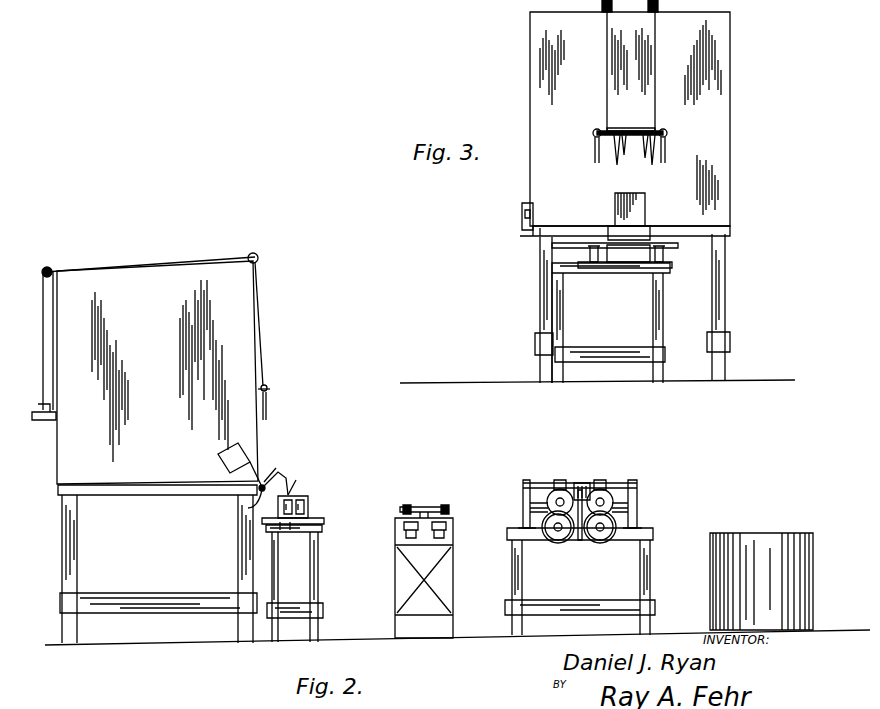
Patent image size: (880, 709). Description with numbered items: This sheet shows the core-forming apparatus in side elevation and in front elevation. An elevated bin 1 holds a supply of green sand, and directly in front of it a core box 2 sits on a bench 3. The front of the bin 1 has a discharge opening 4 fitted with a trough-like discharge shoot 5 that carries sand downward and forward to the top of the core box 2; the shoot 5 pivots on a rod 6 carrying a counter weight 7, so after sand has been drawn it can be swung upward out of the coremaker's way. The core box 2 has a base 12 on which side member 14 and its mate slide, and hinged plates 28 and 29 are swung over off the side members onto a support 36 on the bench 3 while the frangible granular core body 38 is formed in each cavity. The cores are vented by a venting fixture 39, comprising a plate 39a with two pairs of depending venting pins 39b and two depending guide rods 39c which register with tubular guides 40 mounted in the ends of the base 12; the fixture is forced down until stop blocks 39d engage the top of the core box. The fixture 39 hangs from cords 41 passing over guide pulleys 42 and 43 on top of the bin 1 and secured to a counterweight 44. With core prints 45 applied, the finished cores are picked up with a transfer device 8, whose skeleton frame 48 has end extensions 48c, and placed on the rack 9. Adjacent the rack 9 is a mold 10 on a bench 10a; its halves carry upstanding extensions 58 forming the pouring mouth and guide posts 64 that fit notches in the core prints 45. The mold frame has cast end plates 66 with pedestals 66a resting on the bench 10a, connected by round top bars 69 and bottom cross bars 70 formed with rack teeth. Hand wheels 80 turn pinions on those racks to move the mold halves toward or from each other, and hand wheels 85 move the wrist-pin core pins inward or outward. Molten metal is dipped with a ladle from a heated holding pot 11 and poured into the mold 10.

In FIG. 2, the bin 1 is at (157, 372).
In FIG. 3, the bin 1 is at (730, 50).
In FIG. 2, the core box 2 is at (306, 506).
In FIG. 3, the core box 2 is at (648, 262).
In FIG. 2, the bench 3 is at (320, 562).
In FIG. 3, the bench 3 is at (556, 300).
In FIG. 3, the discharge opening 4 is at (640, 205).
In FIG. 2, the discharge shoot 5 is at (275, 478).
In FIG. 3, the discharge shoot 5 is at (648, 228).
In FIG. 2, the rod 6 is at (246, 509).
In FIG. 3, the rod 6 is at (563, 226).
In FIG. 2, the counter weight 7 is at (215, 466).
In FIG. 3, the counter weight 7 is at (521, 205).
In FIG. 2, the transfer device 8 is at (422, 505).
In FIG. 2, the rack 9 is at (453, 520).
In FIG. 2, the mold 10 is at (620, 508).
In FIG. 2, the bench 10a is at (648, 562).
In FIG. 2, the holding pot 11 is at (752, 545).
In FIG. 2, the base 12 is at (322, 530).
In FIG. 3, the base 12 is at (623, 262).
In FIG. 2, the side member 14 is at (157, 564).
In FIG. 3, the side member 14 is at (612, 274).
In FIG. 2, the hinged plate 28 is at (296, 480).
In FIG. 2, the hinged plate 29 is at (300, 497).
In FIG. 3, the hinged plate 29 is at (552, 245).
In FIG. 2, the support 36 is at (324, 520).
In FIG. 3, the support 36 is at (552, 256).
In FIG. 2, the core body 38 is at (402, 534).
In FIG. 2, the venting fixture 39 is at (270, 392).
In FIG. 3, the venting fixture 39 is at (597, 130).
In FIG. 2, the plate 39a is at (268, 386).
In FIG. 3, the plate 39a is at (636, 128).
In FIG. 3, the venting pins 39b is at (617, 160).
In FIG. 2, the guide rods 39c is at (267, 412).
In FIG. 3, the guide rods 39c is at (682, 152).
In FIG. 3, the stop blocks 39d is at (680, 128).
In FIG. 2, the tubular guides 40 is at (288, 532).
In FIG. 3, the tubular guides 40 is at (665, 250).
In FIG. 2, the cords 41 is at (262, 308).
In FIG. 3, the cords 41 is at (607, 62).
In FIG. 2, the guide pulley 42 is at (258, 250).
In FIG. 2, the guide pulley 43 is at (47, 268).
In FIG. 2, the counterweight 44 is at (50, 410).
In FIG. 2, the core prints 45 is at (438, 512).
In FIG. 2, the frame 48 is at (430, 506).
In FIG. 2, the end extensions 48c is at (475, 493).
In FIG. 2, the upstanding extensions 58 is at (582, 482).
In FIG. 2, the guide posts 64 is at (570, 486).
In FIG. 2, the end plates 66 is at (528, 480).
In FIG. 2, the pedestals 66a is at (672, 524).
In FIG. 2, the top bars 69 is at (620, 482).
In FIG. 2, the bottom cross bars 70 is at (612, 540).
In FIG. 2, the hand wheels 80 is at (548, 542).
In FIG. 2, the hand wheels 85 is at (530, 503).